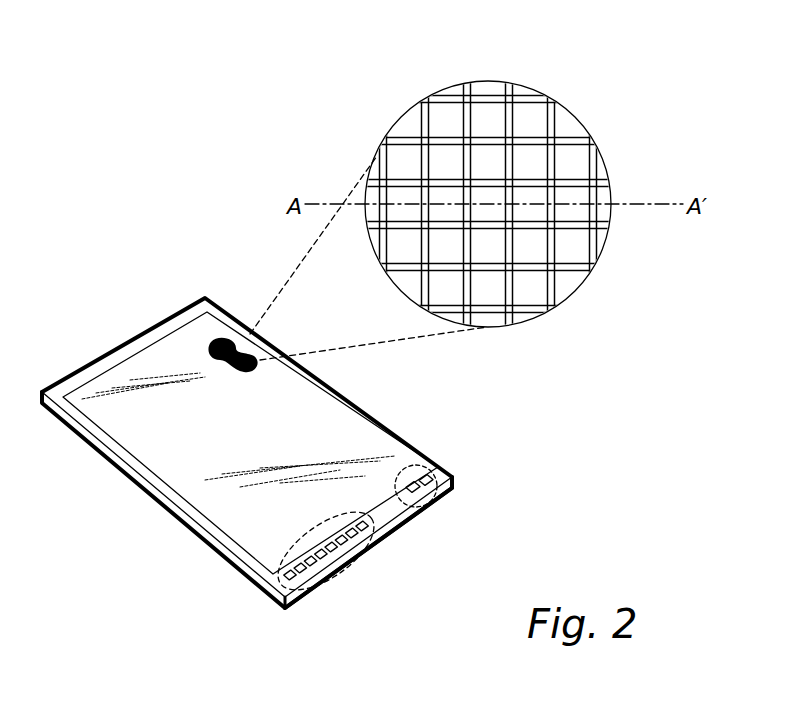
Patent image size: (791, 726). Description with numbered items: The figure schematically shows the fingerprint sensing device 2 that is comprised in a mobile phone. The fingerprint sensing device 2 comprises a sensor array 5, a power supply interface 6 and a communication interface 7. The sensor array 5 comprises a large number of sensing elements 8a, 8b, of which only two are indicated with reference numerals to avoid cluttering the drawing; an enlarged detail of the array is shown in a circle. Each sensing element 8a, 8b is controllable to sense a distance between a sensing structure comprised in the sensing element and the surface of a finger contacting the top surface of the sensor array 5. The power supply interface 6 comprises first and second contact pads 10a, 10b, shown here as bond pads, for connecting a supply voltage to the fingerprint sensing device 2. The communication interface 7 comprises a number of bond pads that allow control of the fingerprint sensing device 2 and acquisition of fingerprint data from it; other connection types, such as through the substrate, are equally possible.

The fingerprint sensing device 2 is at (223, 250).
The sensor array 5 is at (345, 437).
The power supply interface 6 is at (440, 494).
The communication interface 7 is at (348, 580).
The sensing element 8a is at (532, 207).
The sensing element 8b is at (488, 198).
The first contact pad 10a is at (413, 494).
The second contact pad 10b is at (433, 474).